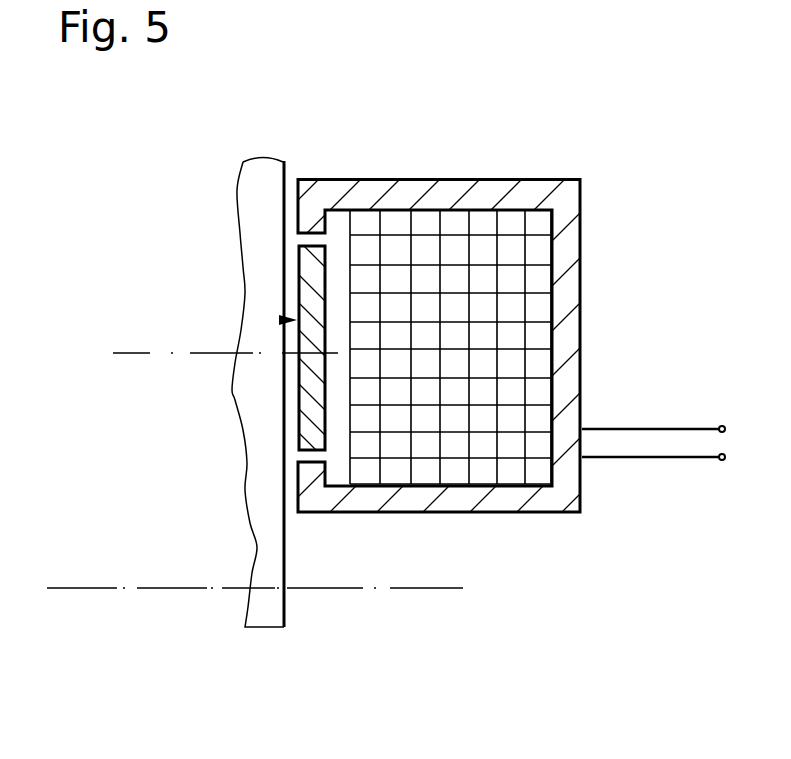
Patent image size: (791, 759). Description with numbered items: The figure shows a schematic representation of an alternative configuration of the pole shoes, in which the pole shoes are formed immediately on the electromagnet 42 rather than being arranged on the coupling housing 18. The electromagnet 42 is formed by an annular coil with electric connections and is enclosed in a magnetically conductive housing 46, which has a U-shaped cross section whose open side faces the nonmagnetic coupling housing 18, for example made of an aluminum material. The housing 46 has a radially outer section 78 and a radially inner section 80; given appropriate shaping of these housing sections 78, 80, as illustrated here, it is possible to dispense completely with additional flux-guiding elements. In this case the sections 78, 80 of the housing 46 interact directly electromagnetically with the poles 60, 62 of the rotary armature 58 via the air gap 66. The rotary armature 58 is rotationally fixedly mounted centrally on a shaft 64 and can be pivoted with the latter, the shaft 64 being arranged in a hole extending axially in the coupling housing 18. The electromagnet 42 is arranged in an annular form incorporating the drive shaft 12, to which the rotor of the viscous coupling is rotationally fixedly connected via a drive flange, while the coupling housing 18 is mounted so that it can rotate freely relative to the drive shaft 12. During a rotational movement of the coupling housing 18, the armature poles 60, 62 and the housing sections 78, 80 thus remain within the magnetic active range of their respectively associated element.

The drive shaft 12 is at (412, 588).
The coupling housing 18 is at (262, 185).
The electromagnet 42 is at (511, 300).
The housing 46 is at (435, 197).
The rotary armature 58 is at (280, 320).
The pole 60 is at (303, 253).
The pole 62 is at (303, 437).
The shaft 64 is at (160, 355).
The air gap 66 is at (307, 457).
The radially outer section 78 is at (305, 226).
The radially inner section 80 is at (307, 477).